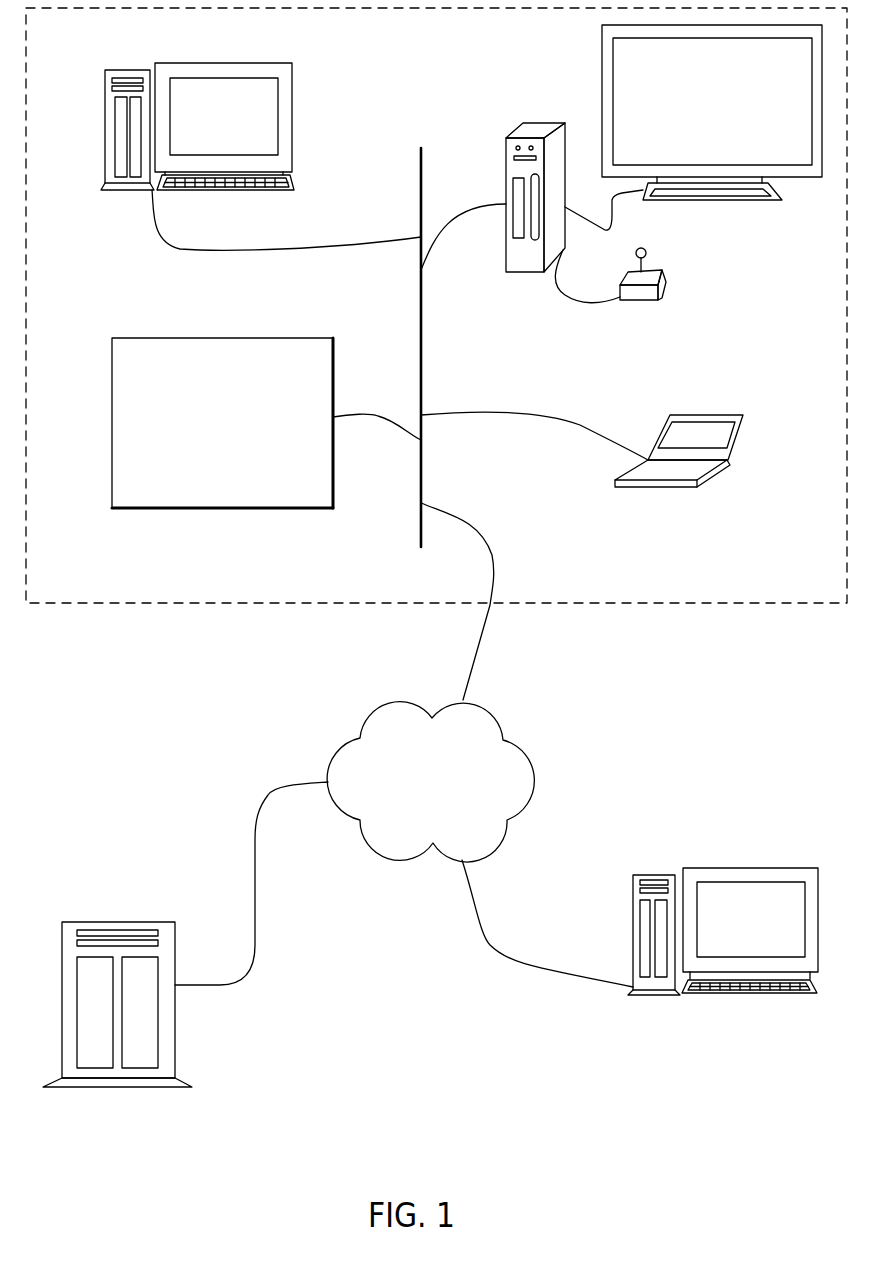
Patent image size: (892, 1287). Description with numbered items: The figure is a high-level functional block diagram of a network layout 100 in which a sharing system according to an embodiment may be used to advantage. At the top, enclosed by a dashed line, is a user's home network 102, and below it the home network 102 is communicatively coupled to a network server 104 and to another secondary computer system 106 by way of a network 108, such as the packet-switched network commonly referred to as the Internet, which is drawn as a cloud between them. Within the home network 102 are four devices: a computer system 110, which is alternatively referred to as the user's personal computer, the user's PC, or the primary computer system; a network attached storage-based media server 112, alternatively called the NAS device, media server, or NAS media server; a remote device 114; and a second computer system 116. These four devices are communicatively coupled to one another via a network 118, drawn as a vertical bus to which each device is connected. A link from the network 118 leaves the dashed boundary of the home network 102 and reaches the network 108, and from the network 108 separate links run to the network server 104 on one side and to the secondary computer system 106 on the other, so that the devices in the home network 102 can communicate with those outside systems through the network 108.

The network layout 100 is at (71, 727).
The home network 102 is at (89, 577).
The network server 104 is at (103, 920).
The secondary computer system 106 is at (720, 867).
The network 108 is at (487, 833).
The computer system 110 is at (261, 153).
The network attached storage-based media server 112 is at (319, 491).
The remote device 114 is at (533, 120).
The second computer system 116 is at (655, 487).
The network 118 is at (476, 347).